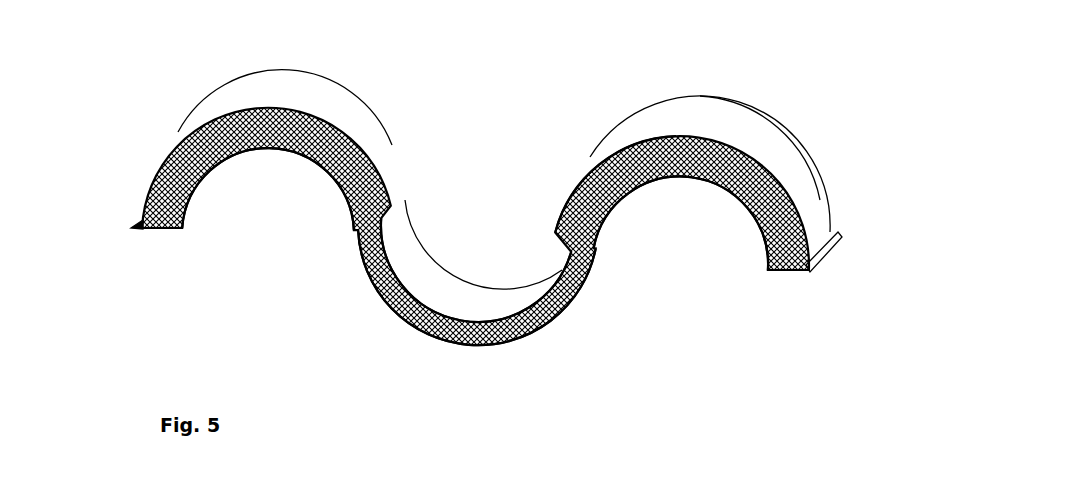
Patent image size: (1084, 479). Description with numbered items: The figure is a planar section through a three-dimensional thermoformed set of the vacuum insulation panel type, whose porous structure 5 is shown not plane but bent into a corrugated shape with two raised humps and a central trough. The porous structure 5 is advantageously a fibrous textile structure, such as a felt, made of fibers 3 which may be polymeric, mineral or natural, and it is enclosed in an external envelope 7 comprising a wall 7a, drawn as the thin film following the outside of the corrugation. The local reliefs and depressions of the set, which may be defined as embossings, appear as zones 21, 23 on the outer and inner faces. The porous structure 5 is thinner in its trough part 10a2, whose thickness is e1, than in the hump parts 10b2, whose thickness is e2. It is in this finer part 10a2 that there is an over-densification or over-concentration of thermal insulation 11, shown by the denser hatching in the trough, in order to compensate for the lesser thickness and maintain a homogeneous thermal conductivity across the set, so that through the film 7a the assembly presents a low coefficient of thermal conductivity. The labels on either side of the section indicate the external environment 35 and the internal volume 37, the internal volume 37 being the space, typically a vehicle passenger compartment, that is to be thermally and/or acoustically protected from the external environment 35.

The fibers 3 is at (162, 232).
The porous structure 5 is at (560, 195).
The external envelope 7 is at (757, 137).
The wall 7a is at (776, 160).
The thermal insulator 11 is at (380, 298).
The zone 21 is at (640, 120).
The zone 23 is at (243, 156).
The external environment 35 is at (636, 386).
The internal volume 37 is at (470, 155).
The thinner part 10a2 is at (380, 380).
The thicker part 10b2 is at (186, 45).
The thickness e1 is at (464, 298).
The thickness e2 is at (272, 88).